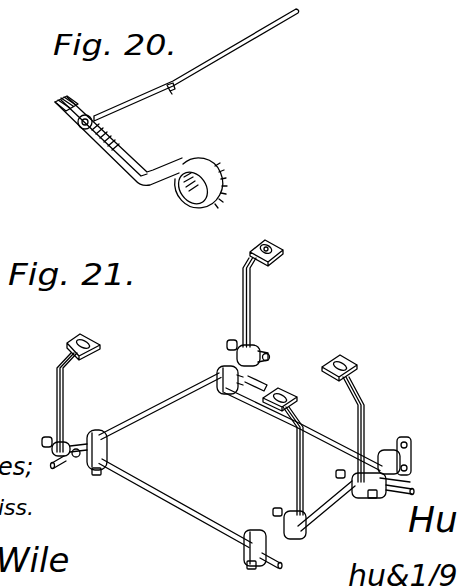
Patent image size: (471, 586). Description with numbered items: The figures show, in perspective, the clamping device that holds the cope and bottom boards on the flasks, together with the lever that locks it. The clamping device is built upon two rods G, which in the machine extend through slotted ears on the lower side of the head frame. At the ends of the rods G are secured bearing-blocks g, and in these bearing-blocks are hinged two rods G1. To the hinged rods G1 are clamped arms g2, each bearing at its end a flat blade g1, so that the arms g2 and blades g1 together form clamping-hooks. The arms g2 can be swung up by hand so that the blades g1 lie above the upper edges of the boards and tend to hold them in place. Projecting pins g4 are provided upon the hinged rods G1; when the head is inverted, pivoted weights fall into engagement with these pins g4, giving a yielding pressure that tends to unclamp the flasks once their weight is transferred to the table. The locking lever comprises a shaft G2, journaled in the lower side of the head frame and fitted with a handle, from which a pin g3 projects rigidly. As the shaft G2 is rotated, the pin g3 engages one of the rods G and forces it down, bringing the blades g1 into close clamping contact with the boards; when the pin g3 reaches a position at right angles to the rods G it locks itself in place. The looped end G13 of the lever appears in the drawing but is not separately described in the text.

In FIG. 20, the shaft G2 is at (280, 24).
In FIG. 20, the pin g3 is at (174, 92).
In FIG. 20, the looped handle end G13 is at (180, 198).
In FIG. 21, the flat blade g1 is at (89, 357).
In FIG. 21, the arm g2 is at (396, 396).
In FIG. 21, the hinged rod G1 is at (343, 520).
In FIG. 21, the rod G is at (185, 515).
In FIG. 21, the bearing-block g is at (84, 424).
In FIG. 21, the projecting pin g4 is at (266, 388).